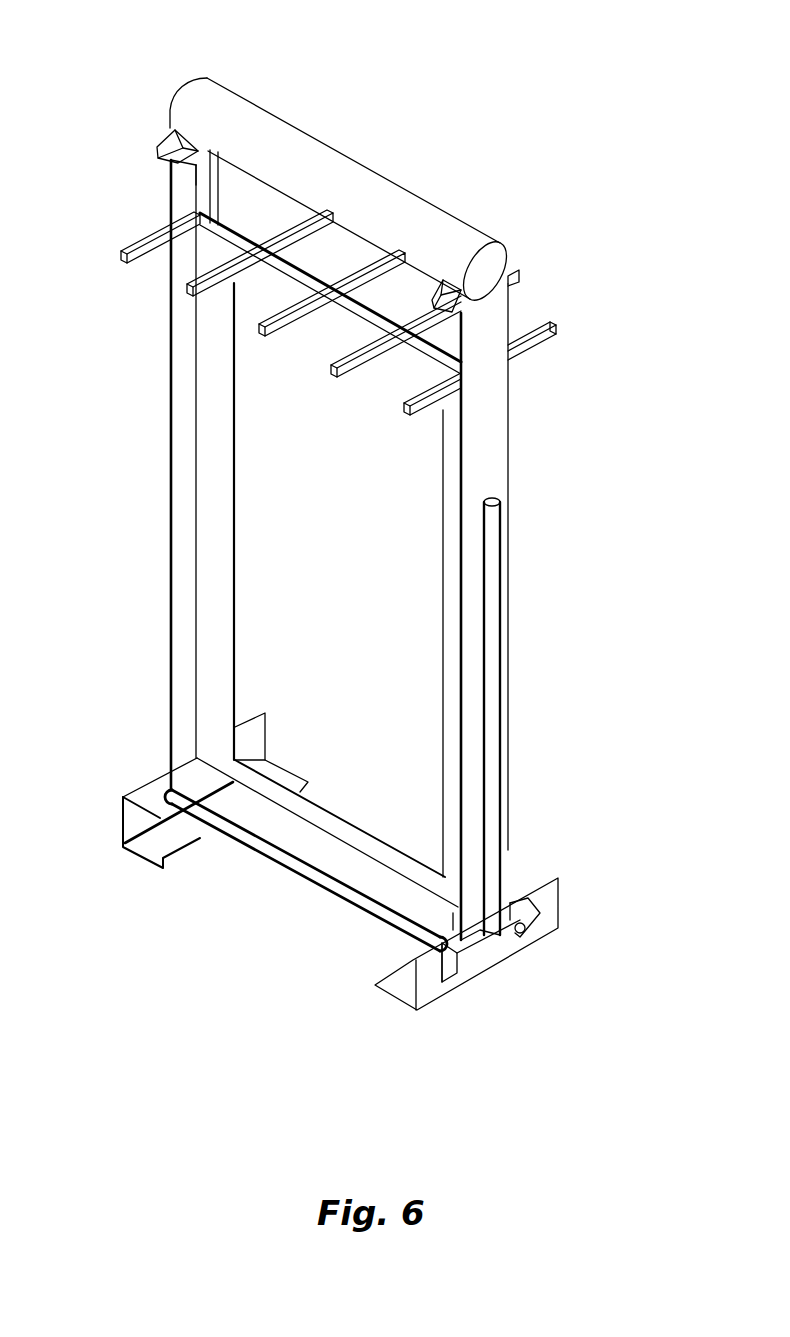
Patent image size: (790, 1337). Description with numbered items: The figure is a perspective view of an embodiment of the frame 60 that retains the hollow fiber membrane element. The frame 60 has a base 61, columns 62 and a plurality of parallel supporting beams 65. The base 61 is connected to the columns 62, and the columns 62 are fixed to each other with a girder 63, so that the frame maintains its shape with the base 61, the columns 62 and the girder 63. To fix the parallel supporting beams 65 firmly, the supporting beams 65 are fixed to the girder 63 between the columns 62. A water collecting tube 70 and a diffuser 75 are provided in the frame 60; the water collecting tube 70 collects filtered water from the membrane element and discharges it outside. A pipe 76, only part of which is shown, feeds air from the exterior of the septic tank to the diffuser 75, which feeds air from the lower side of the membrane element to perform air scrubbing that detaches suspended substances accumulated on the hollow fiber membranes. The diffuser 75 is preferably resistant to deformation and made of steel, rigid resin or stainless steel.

The frame 60 is at (120, 72).
The water collecting tube 70 is at (443, 210).
The supporting beams 65 is at (127, 250).
The girder 63 is at (223, 257).
The columns 62 is at (171, 500).
The base 61 is at (173, 825).
The diffuser 75 is at (252, 840).
The pipe 76 is at (490, 707).